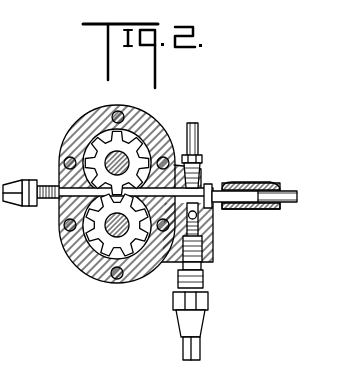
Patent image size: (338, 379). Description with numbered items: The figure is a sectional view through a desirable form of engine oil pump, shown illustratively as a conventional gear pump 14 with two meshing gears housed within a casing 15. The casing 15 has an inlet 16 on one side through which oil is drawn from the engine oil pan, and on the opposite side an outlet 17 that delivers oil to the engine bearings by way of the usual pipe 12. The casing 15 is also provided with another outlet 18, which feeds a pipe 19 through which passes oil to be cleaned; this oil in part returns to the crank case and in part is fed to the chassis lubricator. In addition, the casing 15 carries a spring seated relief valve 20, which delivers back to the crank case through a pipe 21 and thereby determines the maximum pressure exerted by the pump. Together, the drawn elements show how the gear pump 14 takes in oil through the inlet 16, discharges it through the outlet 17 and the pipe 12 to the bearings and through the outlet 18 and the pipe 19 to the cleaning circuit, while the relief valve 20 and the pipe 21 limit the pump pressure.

The pipe 12 is at (280, 206).
The gear pump 14 is at (147, 140).
The casing 15 is at (172, 130).
The inlet 16 is at (55, 210).
The outlet 17 is at (215, 186).
The outlet 18 is at (203, 172).
The pipe 19 is at (198, 135).
The spring seated relief valve 20 is at (196, 217).
The pipe 21 is at (201, 350).